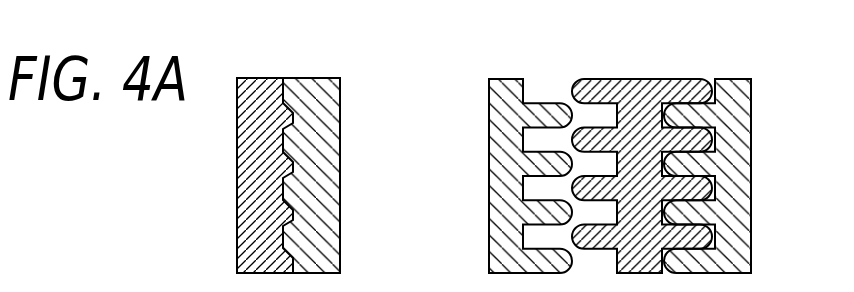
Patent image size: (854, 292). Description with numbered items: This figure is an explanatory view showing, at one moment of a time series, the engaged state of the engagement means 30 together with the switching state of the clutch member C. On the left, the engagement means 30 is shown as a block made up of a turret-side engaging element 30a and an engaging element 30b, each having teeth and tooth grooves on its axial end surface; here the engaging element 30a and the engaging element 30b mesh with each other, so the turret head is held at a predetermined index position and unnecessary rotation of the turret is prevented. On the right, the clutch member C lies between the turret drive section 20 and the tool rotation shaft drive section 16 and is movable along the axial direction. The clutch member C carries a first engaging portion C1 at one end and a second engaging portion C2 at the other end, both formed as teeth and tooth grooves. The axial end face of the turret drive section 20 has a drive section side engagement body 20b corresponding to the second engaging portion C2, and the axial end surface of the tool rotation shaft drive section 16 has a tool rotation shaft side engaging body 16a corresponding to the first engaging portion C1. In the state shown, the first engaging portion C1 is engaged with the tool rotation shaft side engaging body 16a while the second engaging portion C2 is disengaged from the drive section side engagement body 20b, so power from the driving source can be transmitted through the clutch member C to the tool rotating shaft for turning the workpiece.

The engagement means 30 is at (290, 154).
The turret-side engaging element 30a is at (250, 165).
The engaging element 30b is at (330, 163).
The turret drive section 20 is at (495, 160).
The drive section side engagement body 20b is at (547, 160).
The clutch member C is at (642, 141).
The first engaging portion C1 is at (692, 93).
The second engaging portion C2 is at (578, 91).
The tool rotation shaft drive section 16 is at (744, 160).
The tool rotation shaft side engaging body 16a is at (686, 118).